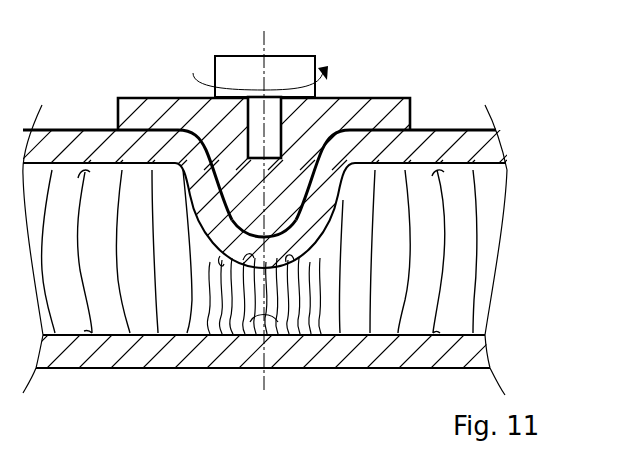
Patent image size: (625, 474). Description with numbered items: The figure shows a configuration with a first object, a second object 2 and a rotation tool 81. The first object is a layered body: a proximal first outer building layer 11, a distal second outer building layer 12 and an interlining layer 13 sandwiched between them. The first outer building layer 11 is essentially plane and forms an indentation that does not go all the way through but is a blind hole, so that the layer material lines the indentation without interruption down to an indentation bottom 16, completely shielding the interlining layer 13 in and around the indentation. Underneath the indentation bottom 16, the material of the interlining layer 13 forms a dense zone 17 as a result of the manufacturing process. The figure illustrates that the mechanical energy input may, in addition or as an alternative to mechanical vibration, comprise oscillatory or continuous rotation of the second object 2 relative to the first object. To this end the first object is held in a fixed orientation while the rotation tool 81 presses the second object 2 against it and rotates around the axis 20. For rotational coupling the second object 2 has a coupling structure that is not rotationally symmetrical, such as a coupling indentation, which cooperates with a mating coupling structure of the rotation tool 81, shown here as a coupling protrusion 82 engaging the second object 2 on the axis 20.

The second object 2 is at (390, 110).
The first outer building layer 11 is at (480, 146).
The second outer building layer 12 is at (470, 356).
The interlining layer 13 is at (465, 255).
The indentation bottom 16 is at (264, 237).
The dense zone 17 is at (240, 305).
The axis 20 is at (264, 31).
The rotation tool 81 is at (238, 70).
The coupling protrusion 82 is at (255, 130).